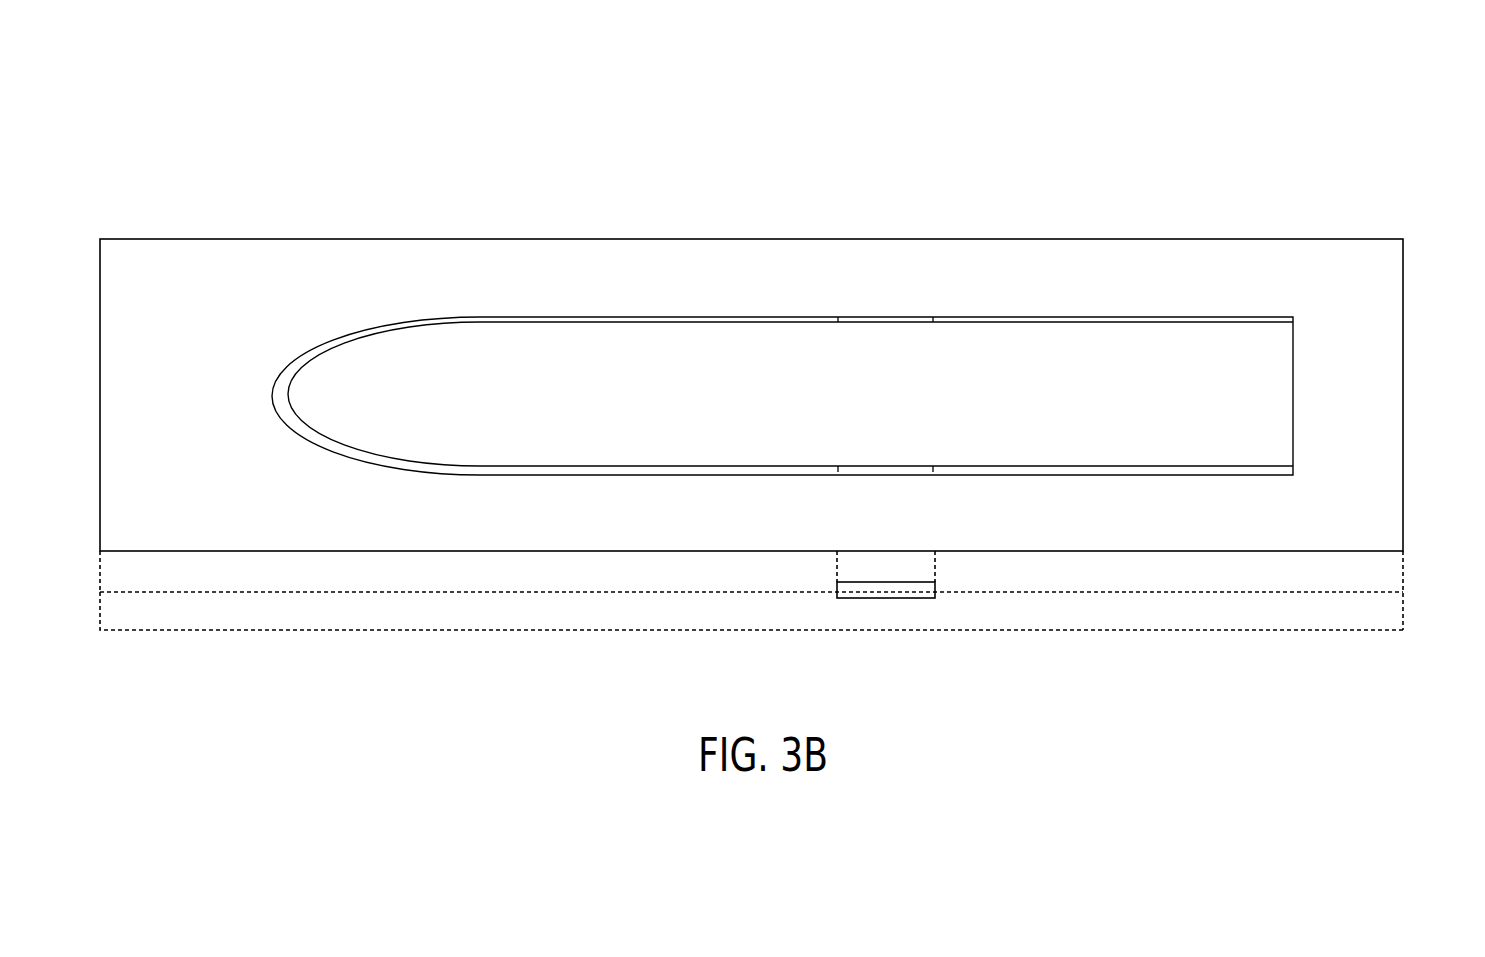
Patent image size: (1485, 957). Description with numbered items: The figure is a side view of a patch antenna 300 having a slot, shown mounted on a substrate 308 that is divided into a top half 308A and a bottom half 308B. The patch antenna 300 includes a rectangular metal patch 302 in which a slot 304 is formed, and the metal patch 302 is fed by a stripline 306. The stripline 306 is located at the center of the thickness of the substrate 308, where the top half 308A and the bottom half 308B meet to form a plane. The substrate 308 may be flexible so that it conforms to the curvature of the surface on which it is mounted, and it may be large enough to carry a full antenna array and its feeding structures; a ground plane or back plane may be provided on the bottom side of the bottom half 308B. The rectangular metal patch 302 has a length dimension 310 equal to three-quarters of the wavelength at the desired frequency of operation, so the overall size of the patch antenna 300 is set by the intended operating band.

The patch antenna 300 is at (884, 135).
The rectangular metal patch 302 is at (622, 256).
The slot 304 is at (337, 345).
The stripline 306 is at (883, 568).
The substrate 308 is at (1413, 557).
The top half 308A is at (808, 567).
The bottom half 308B is at (808, 615).
The length dimension 310 is at (725, 590).